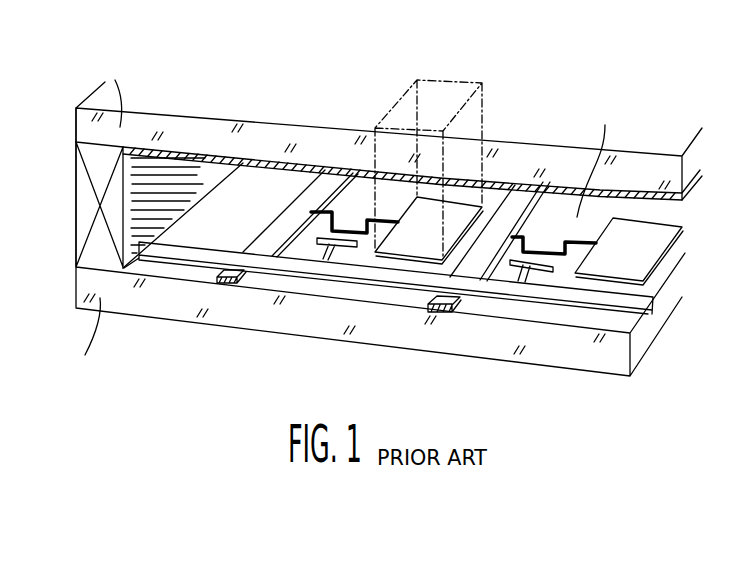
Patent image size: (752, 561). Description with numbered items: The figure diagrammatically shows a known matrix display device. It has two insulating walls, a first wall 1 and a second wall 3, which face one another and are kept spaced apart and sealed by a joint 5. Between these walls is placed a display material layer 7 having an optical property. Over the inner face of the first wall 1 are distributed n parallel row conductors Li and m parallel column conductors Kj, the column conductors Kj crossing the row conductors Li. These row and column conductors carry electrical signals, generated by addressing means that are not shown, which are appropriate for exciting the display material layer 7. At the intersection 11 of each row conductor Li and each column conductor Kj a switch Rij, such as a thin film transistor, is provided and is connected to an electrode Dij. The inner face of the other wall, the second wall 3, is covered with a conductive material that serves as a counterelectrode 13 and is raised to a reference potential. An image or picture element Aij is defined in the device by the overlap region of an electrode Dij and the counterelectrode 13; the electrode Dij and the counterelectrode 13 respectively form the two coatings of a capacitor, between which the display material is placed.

The first wall 1 is at (87, 283).
The second wall 3 is at (83, 128).
The joint 5 is at (82, 207).
The display material layer 7 is at (133, 173).
The intersection 11 is at (240, 240).
The counterelectrode 13 is at (143, 170).
The row conductor Li is at (185, 253).
The column conductor Kj is at (243, 277).
The switch Rij is at (345, 207).
The electrode Dij is at (407, 245).
The picture element Aij is at (437, 195).